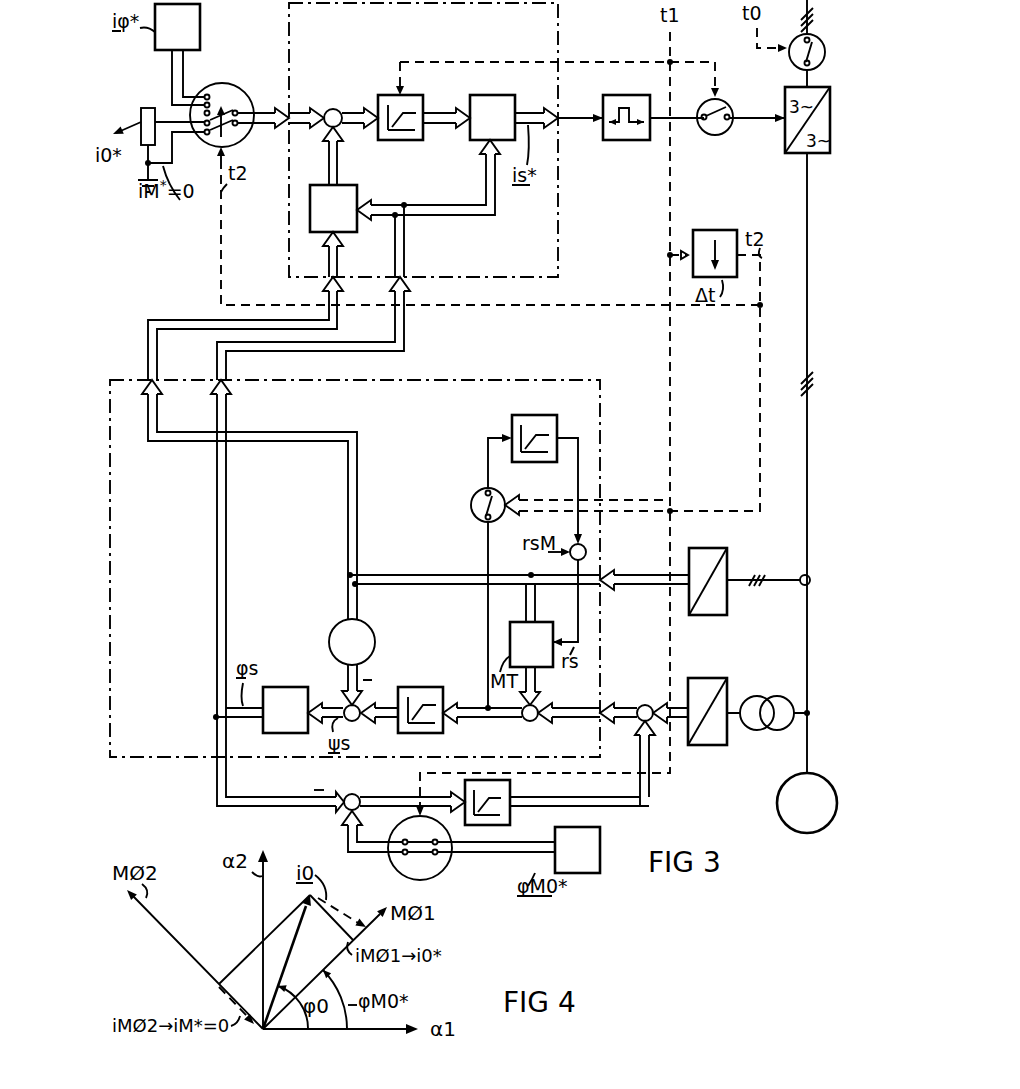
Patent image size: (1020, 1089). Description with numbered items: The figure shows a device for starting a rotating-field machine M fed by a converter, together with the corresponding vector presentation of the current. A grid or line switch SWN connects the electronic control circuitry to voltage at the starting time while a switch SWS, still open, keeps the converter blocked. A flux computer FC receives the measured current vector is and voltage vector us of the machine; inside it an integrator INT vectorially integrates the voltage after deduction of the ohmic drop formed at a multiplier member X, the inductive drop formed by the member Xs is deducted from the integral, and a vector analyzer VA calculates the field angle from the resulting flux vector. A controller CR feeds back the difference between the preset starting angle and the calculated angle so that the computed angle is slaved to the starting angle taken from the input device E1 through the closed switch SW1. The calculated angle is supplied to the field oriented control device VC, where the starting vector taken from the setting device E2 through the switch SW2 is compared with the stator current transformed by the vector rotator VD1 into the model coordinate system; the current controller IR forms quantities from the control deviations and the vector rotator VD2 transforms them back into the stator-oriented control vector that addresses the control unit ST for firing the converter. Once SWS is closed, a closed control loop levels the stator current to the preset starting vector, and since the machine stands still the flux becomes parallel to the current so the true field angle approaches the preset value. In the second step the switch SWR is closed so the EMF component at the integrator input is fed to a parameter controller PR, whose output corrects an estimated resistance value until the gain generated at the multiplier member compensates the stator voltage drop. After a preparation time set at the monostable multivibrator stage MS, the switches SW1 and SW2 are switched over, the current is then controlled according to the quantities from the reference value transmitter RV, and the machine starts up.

The reference value transmitter RV is at (179, 54).
The switch SW2 is at (236, 86).
The setting device E2 is at (141, 117).
The field oriented control device VC is at (558, 15).
The current controller IR is at (398, 140).
The vector rotator VD1 is at (333, 208).
The vector rotator VD2 is at (492, 117).
The control unit ST is at (627, 140).
The switch SWS is at (717, 135).
The line switch SWN is at (794, 66).
The monostable multivibrator stage MS is at (722, 231).
The flux computer FC is at (483, 380).
The parameter controller PR is at (535, 415).
The switch SWR is at (474, 496).
The inductive voltage drop member Xs is at (352, 642).
The integrator INT is at (420, 687).
The vector analyzer VA is at (285, 710).
The multiplier member X is at (544, 613).
The controller CR is at (510, 790).
The switch SW1 is at (440, 862).
The input device E1 is at (577, 850).
The voltage vector us is at (688, 708).
The current vector is is at (685, 576).
The rotating-field machine M is at (807, 803).